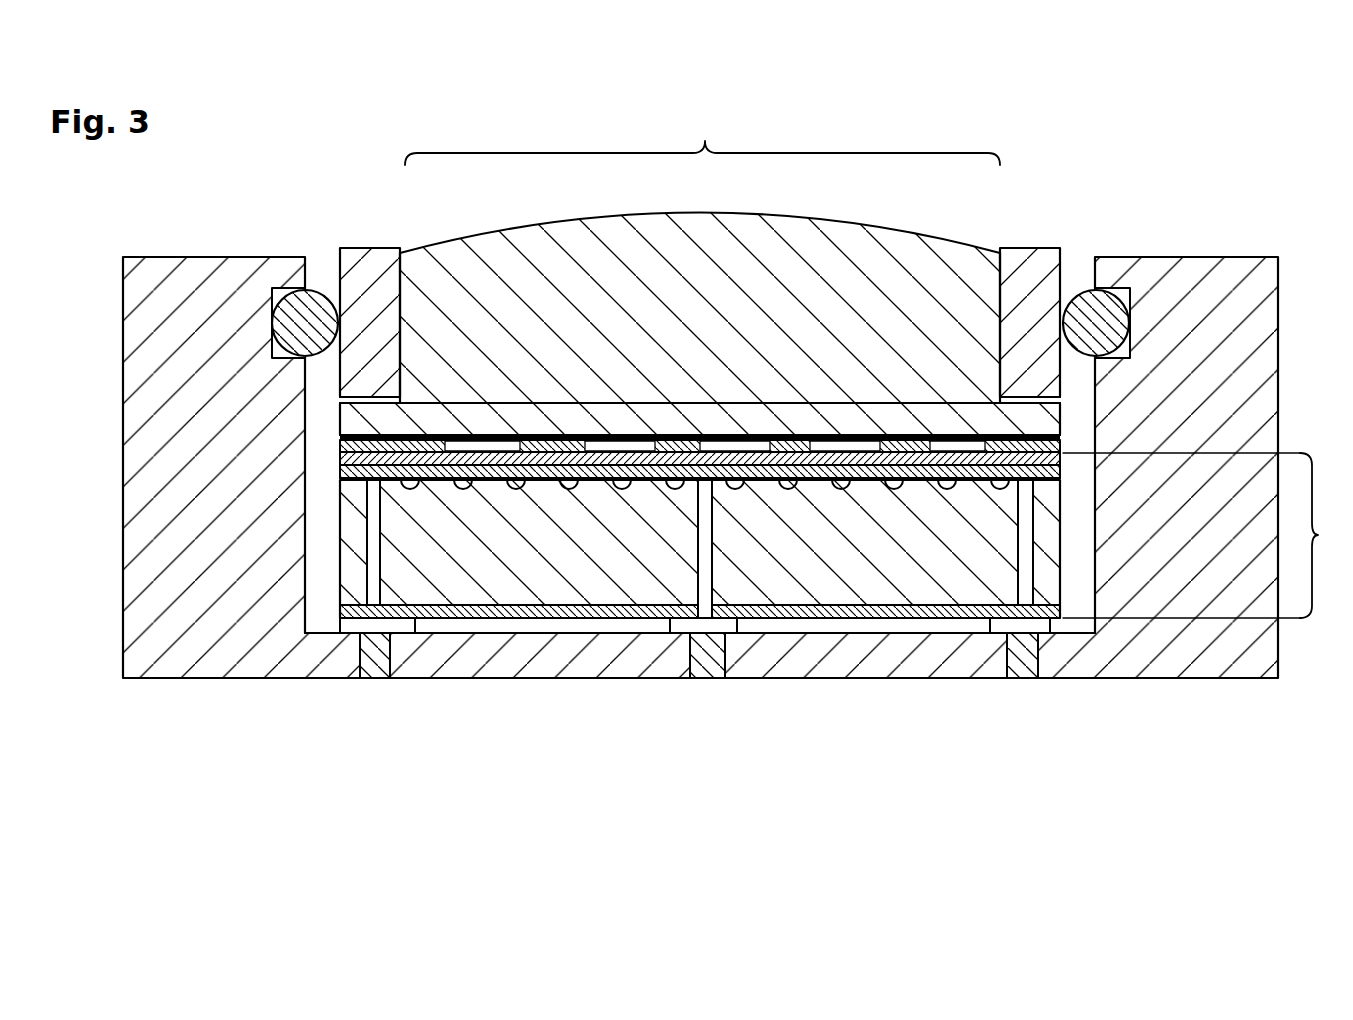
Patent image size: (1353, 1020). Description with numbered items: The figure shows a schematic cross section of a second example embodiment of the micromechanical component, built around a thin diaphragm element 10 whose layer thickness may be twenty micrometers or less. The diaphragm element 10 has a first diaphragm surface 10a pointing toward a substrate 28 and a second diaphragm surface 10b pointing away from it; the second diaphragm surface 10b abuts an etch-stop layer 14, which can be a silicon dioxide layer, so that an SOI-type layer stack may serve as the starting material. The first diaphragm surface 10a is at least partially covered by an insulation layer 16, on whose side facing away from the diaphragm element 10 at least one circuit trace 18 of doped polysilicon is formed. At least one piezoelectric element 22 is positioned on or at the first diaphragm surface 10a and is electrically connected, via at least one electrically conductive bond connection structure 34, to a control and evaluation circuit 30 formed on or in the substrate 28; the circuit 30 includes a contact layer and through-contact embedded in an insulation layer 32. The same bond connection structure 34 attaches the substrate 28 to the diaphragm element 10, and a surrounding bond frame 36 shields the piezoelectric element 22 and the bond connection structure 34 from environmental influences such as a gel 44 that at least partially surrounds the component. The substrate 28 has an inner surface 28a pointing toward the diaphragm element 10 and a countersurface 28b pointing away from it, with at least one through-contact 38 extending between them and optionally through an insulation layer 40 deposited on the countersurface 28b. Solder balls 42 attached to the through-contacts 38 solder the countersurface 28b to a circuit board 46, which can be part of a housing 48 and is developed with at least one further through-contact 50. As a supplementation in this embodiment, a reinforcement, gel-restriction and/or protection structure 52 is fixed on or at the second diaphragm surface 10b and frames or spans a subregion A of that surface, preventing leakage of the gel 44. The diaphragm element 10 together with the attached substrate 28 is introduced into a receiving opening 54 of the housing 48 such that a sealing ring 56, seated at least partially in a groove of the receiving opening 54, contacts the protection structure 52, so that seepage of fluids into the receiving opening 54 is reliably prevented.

The diaphragm element 10 is at (886, 420).
The first diaphragm surface 10a is at (905, 440).
The second diaphragm surface 10b is at (945, 403).
The etch-stop layer 14 is at (1063, 403).
The insulation layer 16 is at (455, 450).
The circuit trace 18 is at (408, 447).
The piezoelectric element 22 is at (600, 441).
The substrate 28 is at (1208, 535).
The inner surface 28a is at (510, 458).
The countersurface 28b is at (488, 615).
The control and evaluation circuit 30 is at (426, 485).
The insulation layer 32 is at (345, 463).
The electrically conductive bond connection structure 34 is at (598, 485).
The bond frame 36 is at (345, 455).
The through-contact 38 is at (716, 532).
The insulation layer 40 is at (892, 492).
The solder ball 42 is at (678, 622).
The gel 44 is at (665, 270).
The circuit board 46 is at (600, 655).
The housing 48 is at (1187, 682).
The further through-contact 50 is at (380, 660).
The reinforcement, gel-restriction and/or protection structure 52 is at (360, 268).
The receiving opening 54 is at (324, 415).
The sealing ring 56 is at (310, 312).
The subregion of second diaphragm surface A is at (702, 135).